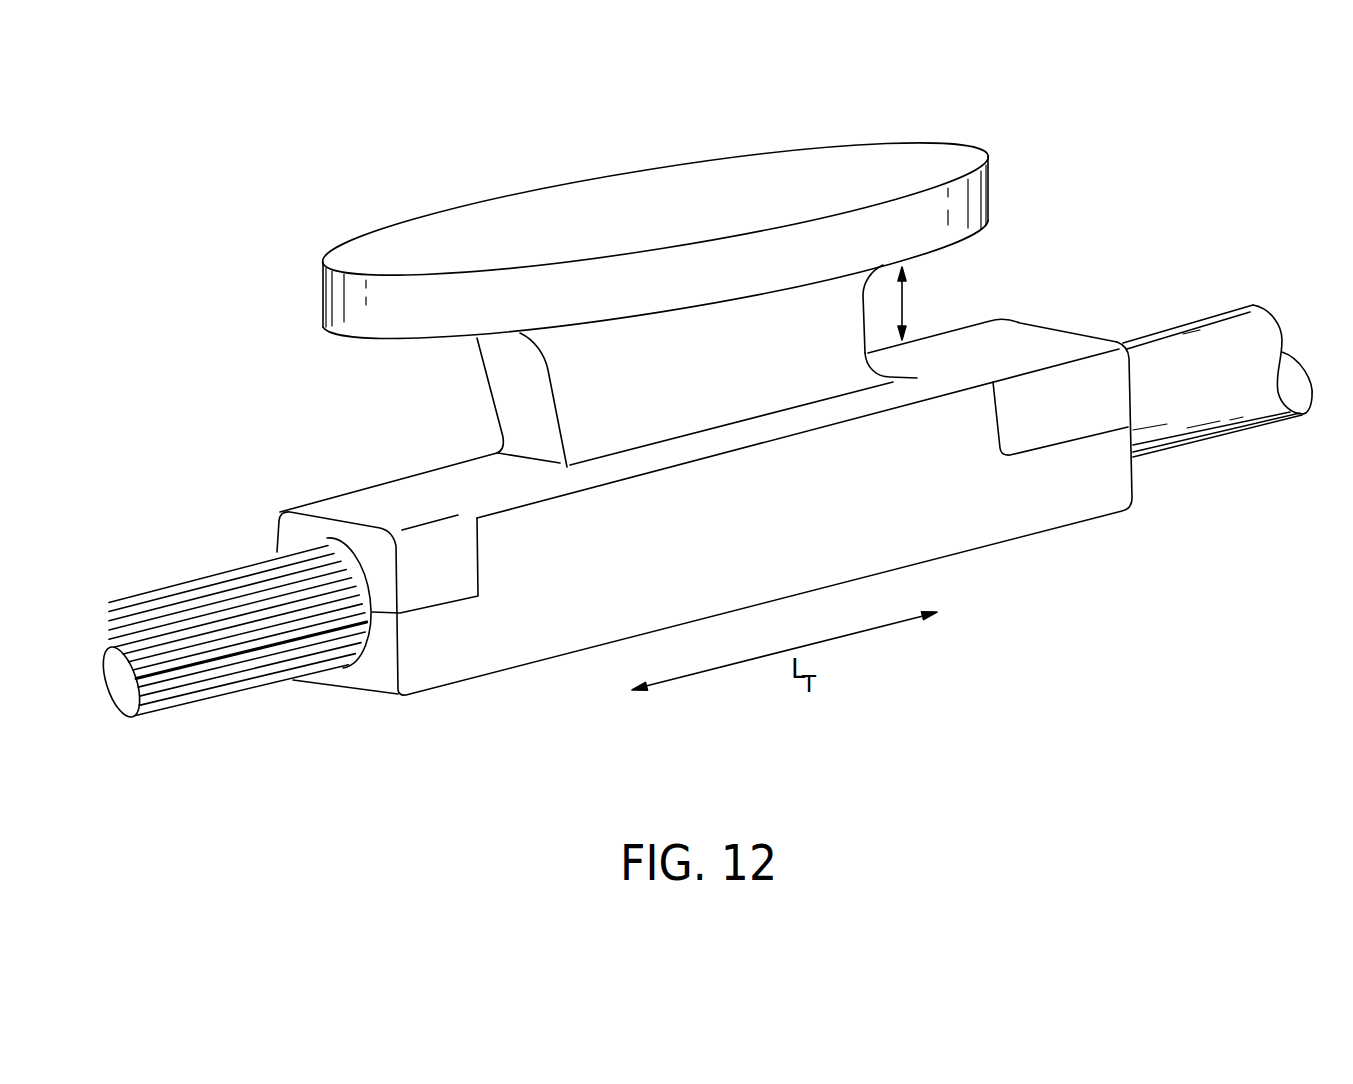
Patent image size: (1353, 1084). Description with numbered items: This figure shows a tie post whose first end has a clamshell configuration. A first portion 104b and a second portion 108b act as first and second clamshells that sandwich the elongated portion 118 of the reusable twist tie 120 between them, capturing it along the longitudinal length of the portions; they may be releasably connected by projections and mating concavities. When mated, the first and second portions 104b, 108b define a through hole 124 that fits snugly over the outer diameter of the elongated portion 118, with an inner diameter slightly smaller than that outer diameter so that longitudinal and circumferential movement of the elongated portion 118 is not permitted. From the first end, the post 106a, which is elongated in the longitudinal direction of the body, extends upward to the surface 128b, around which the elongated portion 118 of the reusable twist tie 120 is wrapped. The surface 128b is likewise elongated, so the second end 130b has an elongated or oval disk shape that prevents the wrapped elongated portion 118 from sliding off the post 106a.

The second end 130b is at (897, 145).
The surface 128b is at (973, 238).
The first portion 104b is at (1035, 338).
The post 106a is at (489, 383).
The through hole 124 is at (327, 533).
The reusable twist tie 120 is at (152, 559).
The elongated portion 118 is at (240, 688).
The second portion 108b is at (1093, 520).